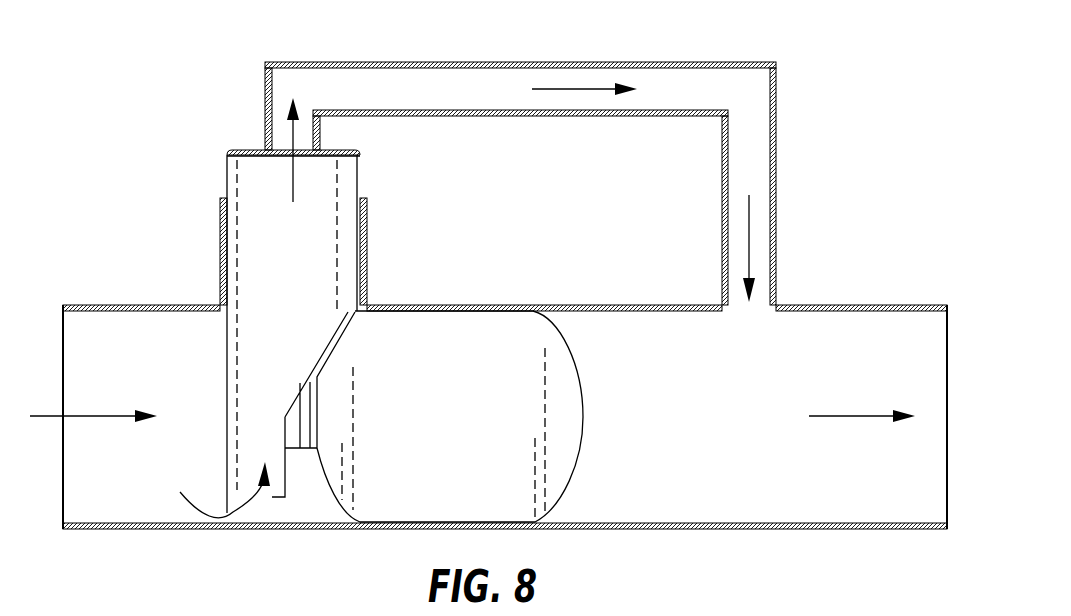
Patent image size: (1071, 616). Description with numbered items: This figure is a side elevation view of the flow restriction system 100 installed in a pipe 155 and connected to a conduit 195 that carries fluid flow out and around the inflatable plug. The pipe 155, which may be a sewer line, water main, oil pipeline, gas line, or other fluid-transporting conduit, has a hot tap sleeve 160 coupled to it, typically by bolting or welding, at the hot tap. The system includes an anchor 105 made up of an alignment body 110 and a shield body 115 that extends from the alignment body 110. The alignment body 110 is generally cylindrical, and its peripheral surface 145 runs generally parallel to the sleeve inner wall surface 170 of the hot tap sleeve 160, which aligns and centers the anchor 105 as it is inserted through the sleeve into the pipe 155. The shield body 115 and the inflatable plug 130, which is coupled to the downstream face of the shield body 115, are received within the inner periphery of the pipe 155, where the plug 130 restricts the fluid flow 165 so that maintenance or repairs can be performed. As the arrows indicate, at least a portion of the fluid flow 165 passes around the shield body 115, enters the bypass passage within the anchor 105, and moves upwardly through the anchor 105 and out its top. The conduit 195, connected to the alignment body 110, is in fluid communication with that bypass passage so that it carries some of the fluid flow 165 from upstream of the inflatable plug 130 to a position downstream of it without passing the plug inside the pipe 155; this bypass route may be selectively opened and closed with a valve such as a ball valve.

The flow restriction system 100 is at (154, 224).
The anchor 105 is at (345, 178).
The alignment body 110 is at (250, 170).
The shield body 115 is at (250, 378).
The inflatable plug 130 is at (558, 397).
The peripheral surface 145 is at (309, 272).
The pipe 155 is at (122, 530).
The hot tap sleeve 160 is at (366, 257).
The fluid flow 165 is at (586, 92).
The sleeve inner wall surface 170 is at (238, 228).
The conduit 195 is at (700, 62).